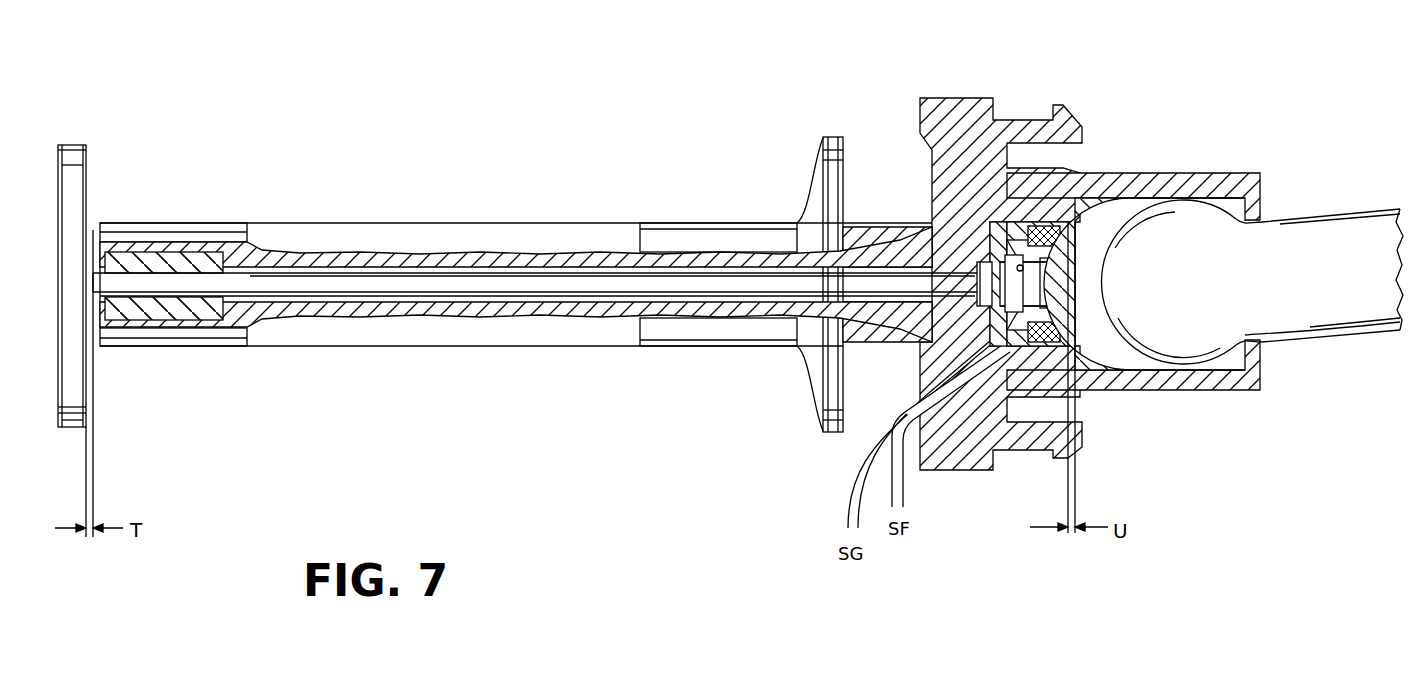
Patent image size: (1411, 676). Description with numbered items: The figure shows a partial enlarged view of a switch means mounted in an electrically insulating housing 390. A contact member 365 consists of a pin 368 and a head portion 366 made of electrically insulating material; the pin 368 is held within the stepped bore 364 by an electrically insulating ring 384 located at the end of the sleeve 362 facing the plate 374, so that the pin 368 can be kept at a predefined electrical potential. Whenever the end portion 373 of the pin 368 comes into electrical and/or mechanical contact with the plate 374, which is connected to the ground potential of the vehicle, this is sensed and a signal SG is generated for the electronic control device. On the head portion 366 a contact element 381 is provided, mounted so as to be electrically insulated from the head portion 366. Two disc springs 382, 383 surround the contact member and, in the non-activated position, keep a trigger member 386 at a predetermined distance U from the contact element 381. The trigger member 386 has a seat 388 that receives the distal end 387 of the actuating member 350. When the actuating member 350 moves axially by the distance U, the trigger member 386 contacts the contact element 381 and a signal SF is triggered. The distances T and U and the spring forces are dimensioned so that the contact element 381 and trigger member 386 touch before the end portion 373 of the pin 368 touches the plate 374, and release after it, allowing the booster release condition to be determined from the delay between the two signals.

The actuating member 350 is at (1345, 212).
The sleeve 362 is at (440, 232).
The stepped bore 364 is at (586, 268).
The contact member 365 is at (341, 272).
The head portion 366 is at (997, 235).
The pin 368 is at (503, 278).
The end portion 373 is at (105, 287).
The plate 374 is at (82, 180).
The contact element 381 is at (1070, 272).
The disc spring 382 is at (1062, 226).
The disc spring 383 is at (1090, 232).
The electrically insulating ring 384 is at (172, 257).
The trigger member 386 is at (1120, 390).
The distal end 387 is at (1243, 292).
The seat 388 is at (1106, 292).
The housing 390 is at (955, 97).